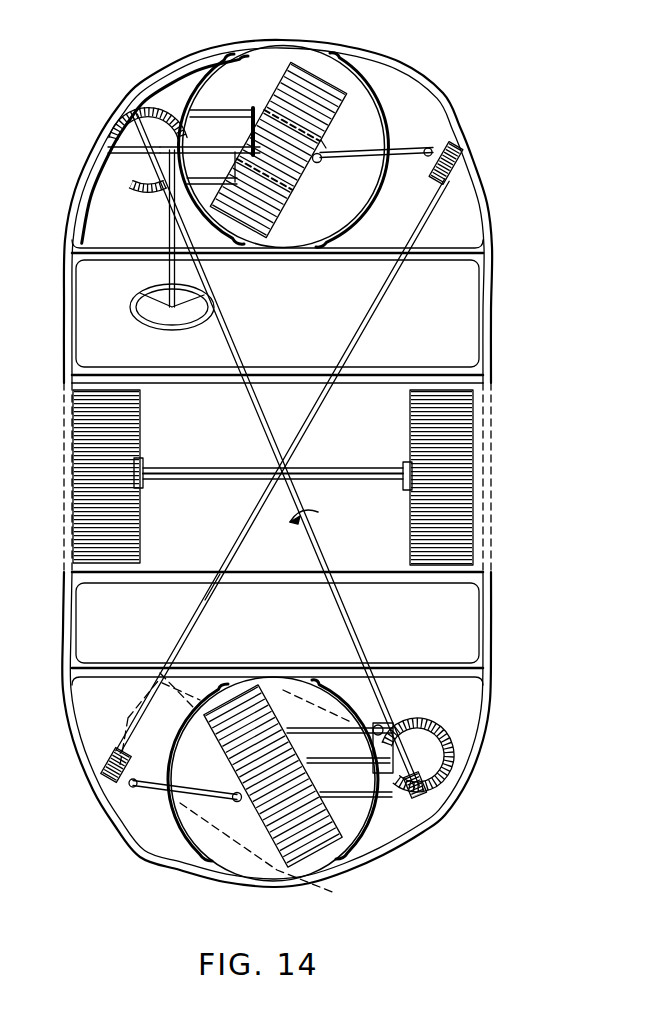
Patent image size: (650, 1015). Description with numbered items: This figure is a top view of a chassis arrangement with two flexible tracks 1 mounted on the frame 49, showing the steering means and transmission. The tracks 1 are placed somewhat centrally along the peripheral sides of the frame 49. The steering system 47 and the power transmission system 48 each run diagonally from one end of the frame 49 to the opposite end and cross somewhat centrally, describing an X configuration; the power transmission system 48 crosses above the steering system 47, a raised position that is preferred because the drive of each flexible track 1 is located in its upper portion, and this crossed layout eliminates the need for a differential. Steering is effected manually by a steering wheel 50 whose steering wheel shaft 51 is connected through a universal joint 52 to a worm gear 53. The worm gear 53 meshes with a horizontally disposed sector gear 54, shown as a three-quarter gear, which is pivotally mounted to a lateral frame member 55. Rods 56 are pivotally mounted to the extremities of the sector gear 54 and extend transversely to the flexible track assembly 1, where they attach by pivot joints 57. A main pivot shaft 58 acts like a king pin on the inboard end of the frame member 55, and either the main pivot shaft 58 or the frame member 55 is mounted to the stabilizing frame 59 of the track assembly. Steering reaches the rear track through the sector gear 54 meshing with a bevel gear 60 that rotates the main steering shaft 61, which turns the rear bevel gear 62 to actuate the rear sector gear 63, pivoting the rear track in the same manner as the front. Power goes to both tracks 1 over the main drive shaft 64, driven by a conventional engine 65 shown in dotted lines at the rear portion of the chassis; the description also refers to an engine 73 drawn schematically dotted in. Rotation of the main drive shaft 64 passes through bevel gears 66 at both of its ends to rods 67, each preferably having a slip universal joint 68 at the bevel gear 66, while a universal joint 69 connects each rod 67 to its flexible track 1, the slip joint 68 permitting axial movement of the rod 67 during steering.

The flexible track 1 is at (72, 457).
The steering system 47 is at (242, 347).
The power transmission system 48 is at (310, 434).
The frame 49 is at (490, 207).
The steering wheel 50 is at (132, 318).
The steering wheel shaft 51 is at (168, 268).
The universal joint 52 is at (140, 172).
The worm gear 53 is at (193, 146).
The sector gear 54 is at (177, 103).
The lateral frame member 55 is at (108, 150).
The rods 56 is at (232, 56).
The pivot joints 57 is at (263, 105).
The main pivot shaft 58 is at (247, 115).
The stabilizing frame 59 is at (323, 143).
The bevel gear 60 is at (143, 110).
The main steering shaft 61 is at (325, 545).
The rear bevel gear 62 is at (425, 787).
The rear sector gear 63 is at (445, 735).
The main drive shaft 64 is at (210, 600).
The engine 65 is at (200, 668).
The bevel gears 66 is at (107, 785).
The rods 67 is at (393, 150).
The slip universal joint 68 is at (435, 165).
The universal joint 69 is at (317, 162).
The engine 73 is at (325, 890).